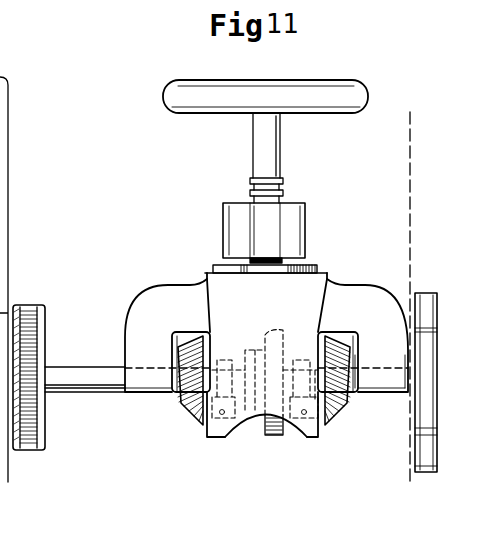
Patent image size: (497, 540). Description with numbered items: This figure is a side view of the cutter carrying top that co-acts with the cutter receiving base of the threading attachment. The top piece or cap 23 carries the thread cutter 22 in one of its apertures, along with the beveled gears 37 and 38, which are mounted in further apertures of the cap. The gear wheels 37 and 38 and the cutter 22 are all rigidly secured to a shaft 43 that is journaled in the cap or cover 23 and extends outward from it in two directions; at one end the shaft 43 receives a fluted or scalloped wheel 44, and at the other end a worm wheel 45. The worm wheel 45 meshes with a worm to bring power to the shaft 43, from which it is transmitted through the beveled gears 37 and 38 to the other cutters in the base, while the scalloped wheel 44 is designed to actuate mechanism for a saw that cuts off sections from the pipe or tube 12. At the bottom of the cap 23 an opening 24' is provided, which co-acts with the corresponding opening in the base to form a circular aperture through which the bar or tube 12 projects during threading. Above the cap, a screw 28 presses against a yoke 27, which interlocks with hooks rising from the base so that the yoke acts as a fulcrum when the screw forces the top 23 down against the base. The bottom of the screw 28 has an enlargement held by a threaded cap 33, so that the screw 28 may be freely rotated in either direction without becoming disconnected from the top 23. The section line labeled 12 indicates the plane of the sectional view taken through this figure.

The bar or tube 12 is at (409, 301).
The thread cutter 22 is at (283, 432).
The top piece or cap 23 is at (266, 355).
The opening 24' is at (264, 437).
The yoke 27 is at (268, 240).
The screw 28 is at (283, 181).
The threaded cap 33 is at (317, 268).
The beveled gear 37 is at (185, 388).
The beveled gear 38 is at (340, 412).
The shaft 43 is at (93, 386).
The fluted or scalloped wheel 44 is at (425, 293).
The worm wheel 45 is at (37, 450).